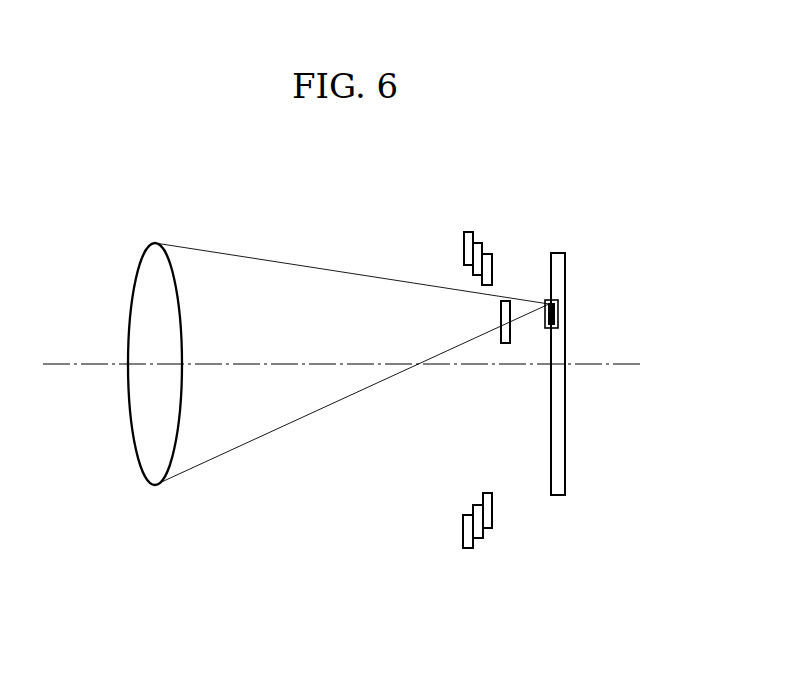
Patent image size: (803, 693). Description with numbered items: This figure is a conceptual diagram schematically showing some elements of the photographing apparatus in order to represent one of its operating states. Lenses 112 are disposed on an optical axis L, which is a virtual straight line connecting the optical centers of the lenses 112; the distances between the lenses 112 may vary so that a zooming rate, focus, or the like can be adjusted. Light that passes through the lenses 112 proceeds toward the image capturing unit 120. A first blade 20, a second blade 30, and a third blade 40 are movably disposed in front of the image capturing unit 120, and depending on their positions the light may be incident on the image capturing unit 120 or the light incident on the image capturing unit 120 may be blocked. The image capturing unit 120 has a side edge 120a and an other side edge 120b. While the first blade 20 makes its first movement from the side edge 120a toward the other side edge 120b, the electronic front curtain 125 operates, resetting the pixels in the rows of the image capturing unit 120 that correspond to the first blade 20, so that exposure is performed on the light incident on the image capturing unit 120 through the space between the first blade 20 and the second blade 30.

The optical axis L is at (83, 364).
The lenses 112 is at (150, 245).
The second blade 30 is at (501, 211).
The first blade 20 is at (507, 302).
The image capturing unit 120 is at (580, 464).
The side edge 120a is at (562, 252).
The other side edge 120b is at (557, 495).
The electronic front curtain 125 is at (565, 306).
The third blade 40 is at (501, 556).